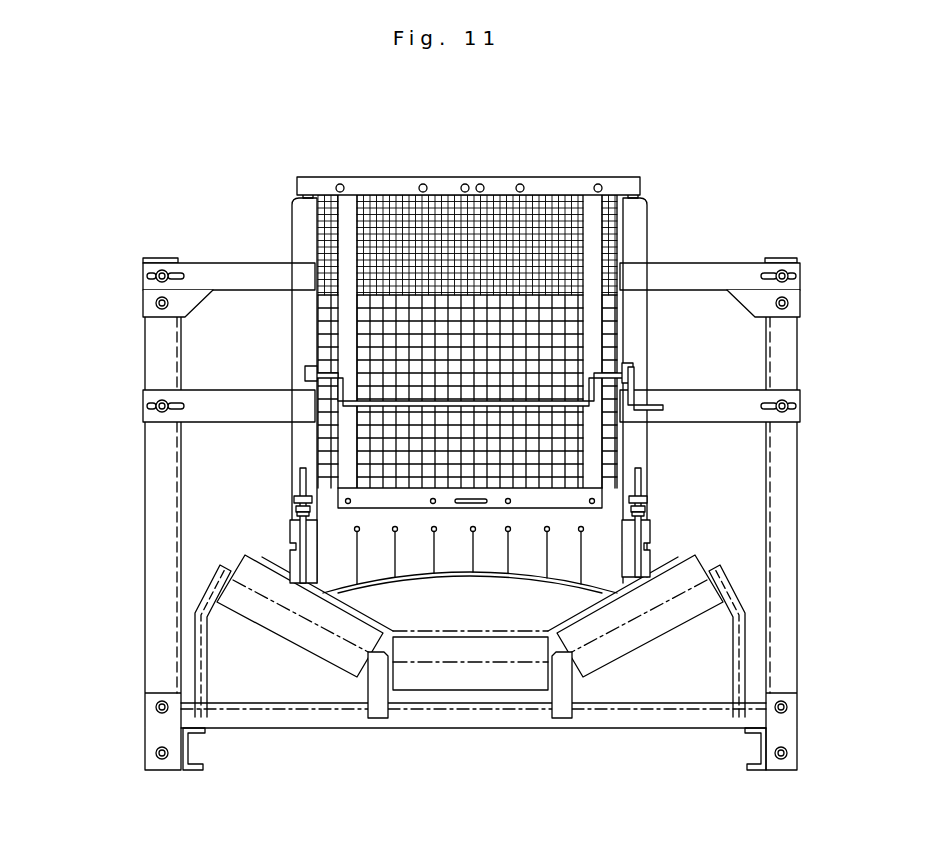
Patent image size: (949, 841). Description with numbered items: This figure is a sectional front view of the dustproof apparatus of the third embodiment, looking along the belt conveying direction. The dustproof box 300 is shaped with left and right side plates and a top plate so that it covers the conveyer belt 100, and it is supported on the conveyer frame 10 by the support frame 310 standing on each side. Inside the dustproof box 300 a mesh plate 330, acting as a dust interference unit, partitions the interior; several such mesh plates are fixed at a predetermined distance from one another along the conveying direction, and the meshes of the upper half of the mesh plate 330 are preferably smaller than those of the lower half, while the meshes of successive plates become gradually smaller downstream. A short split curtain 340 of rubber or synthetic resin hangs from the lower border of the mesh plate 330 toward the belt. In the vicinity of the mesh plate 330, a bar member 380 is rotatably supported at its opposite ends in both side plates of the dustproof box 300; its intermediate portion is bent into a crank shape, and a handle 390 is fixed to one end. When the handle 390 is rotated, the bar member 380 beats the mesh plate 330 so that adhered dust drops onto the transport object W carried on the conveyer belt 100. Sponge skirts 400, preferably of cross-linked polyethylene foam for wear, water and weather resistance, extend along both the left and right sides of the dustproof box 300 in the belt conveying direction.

The conveyer frame 10 is at (192, 773).
The conveyer belt 100 is at (667, 562).
The dustproof box 300 is at (310, 231).
The support frame 310 is at (158, 500).
The mesh plate 330 is at (403, 197).
The split curtain 340 is at (343, 535).
The bar member 380 is at (312, 405).
The handle 390 is at (655, 404).
The sponge skirt 400 is at (292, 557).
The transport object W is at (467, 620).